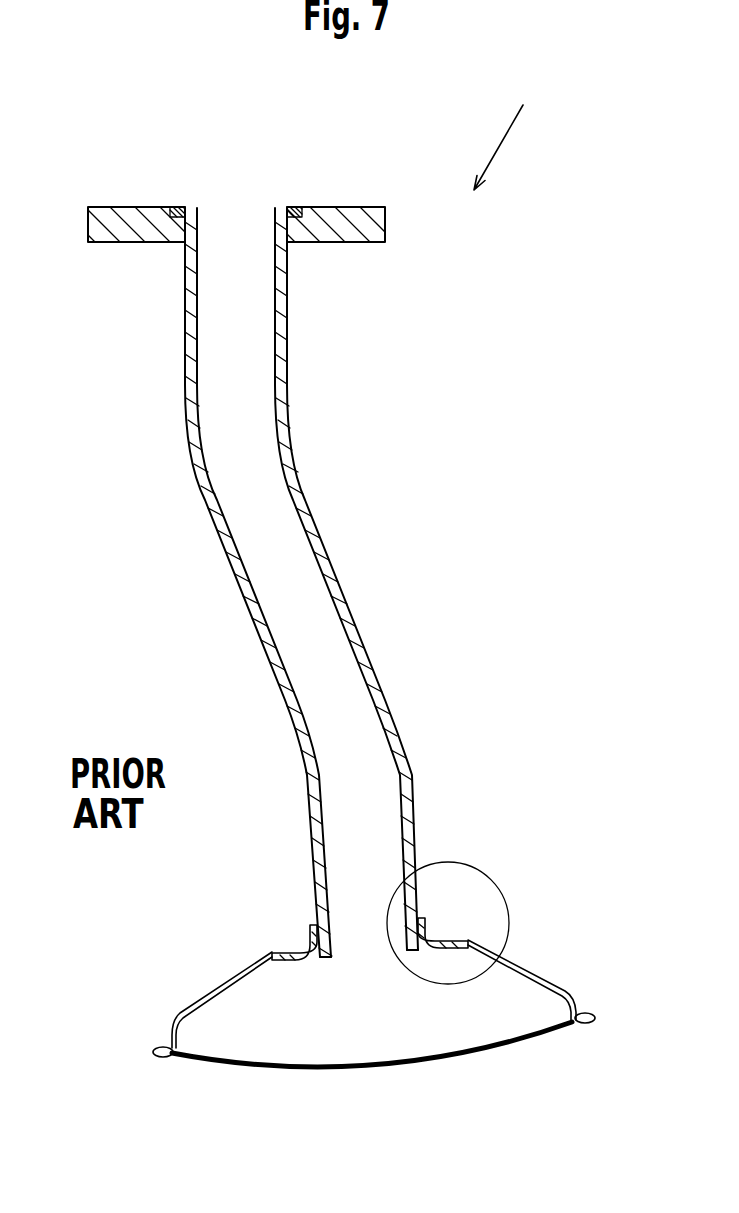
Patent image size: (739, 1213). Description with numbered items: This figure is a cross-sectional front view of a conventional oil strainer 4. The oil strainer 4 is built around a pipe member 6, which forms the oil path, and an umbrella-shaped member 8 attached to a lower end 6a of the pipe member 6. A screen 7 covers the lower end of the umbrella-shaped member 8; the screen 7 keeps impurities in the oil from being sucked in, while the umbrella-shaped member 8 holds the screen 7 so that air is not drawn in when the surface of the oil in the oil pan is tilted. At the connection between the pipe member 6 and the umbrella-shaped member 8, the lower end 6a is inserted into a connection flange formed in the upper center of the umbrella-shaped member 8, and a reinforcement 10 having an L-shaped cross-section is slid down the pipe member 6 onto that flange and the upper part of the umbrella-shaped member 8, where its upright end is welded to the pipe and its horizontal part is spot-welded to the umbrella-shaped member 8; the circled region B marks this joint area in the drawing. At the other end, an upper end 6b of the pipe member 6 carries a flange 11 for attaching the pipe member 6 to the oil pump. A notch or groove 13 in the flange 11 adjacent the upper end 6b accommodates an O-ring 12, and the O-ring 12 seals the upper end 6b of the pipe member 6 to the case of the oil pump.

The oil strainer 4 is at (550, 103).
The pipe member 6 is at (324, 529).
The lower end of pipe member 6a is at (313, 957).
The upper end of pipe member 6b is at (183, 250).
The screen 7 is at (477, 1045).
The umbrella-shaped member 8 is at (545, 958).
The reinforcement 10 is at (455, 940).
The flange 11 is at (385, 221).
The O-ring 12 is at (185, 207).
The notch or groove 13 is at (291, 207).
The detail region B is at (496, 879).